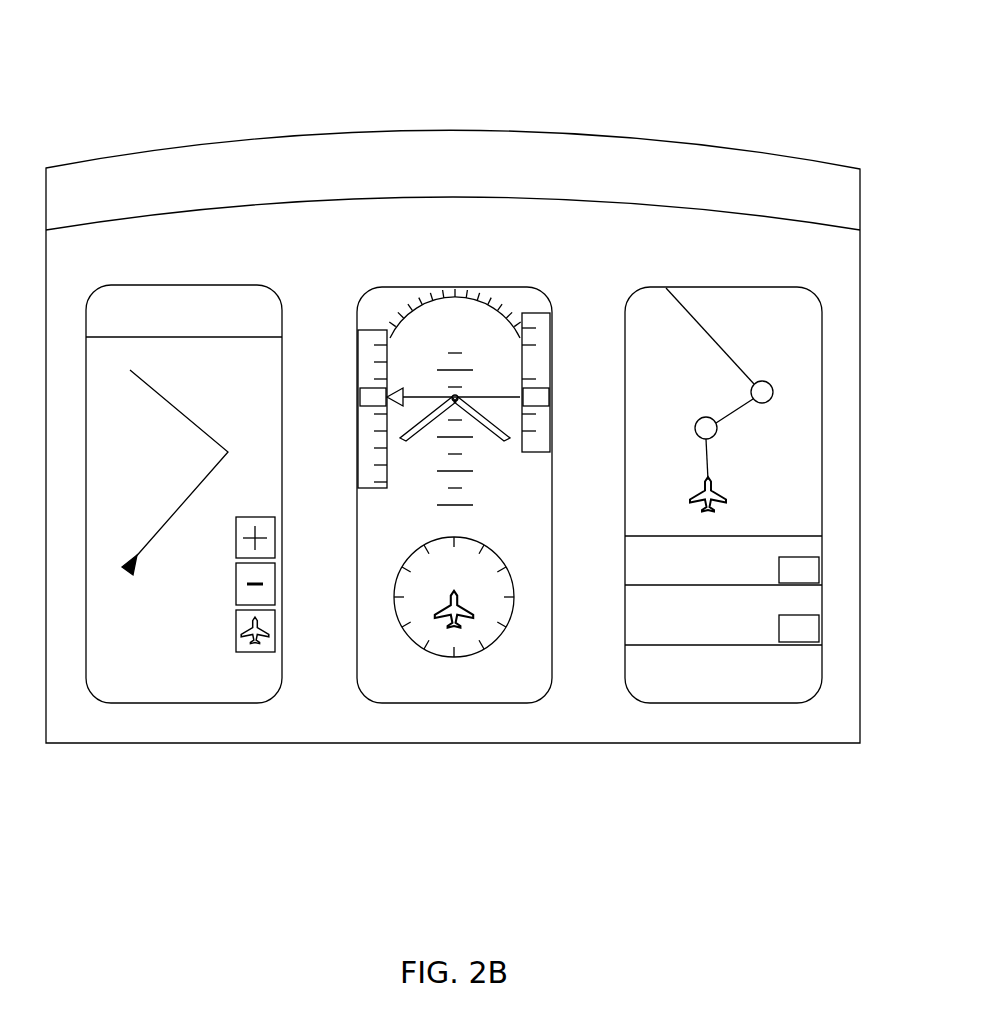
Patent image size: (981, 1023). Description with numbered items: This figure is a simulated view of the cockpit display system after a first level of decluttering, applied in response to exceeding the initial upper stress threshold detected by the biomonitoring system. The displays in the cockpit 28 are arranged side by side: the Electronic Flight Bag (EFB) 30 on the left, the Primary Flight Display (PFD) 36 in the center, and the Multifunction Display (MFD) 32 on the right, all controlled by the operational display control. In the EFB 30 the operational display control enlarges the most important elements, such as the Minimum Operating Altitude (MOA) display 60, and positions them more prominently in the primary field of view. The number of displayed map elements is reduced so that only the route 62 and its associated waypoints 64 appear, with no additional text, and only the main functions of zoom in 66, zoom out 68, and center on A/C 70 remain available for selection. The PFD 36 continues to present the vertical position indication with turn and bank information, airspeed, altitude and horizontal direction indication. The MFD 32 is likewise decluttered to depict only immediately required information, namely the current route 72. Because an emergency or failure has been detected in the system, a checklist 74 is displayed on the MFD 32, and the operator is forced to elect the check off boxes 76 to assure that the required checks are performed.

The cockpit 28 is at (582, 130).
The Electronic Flight Bag (EFB) 30 is at (213, 524).
The Multifunction Display (MFD) 32 is at (770, 554).
The Primary Flight Display (PFD) 36 is at (465, 705).
The Minimum Operating Altitude (MOA) display 60 is at (235, 317).
The route 62 is at (172, 522).
The waypoints 64 is at (126, 573).
The zoom in function 66 is at (268, 525).
The zoom out function 68 is at (268, 584).
The center on A/C function 70 is at (268, 640).
The current route 72 is at (732, 413).
The checklist 74 is at (802, 532).
The check off boxes 76 is at (822, 573).